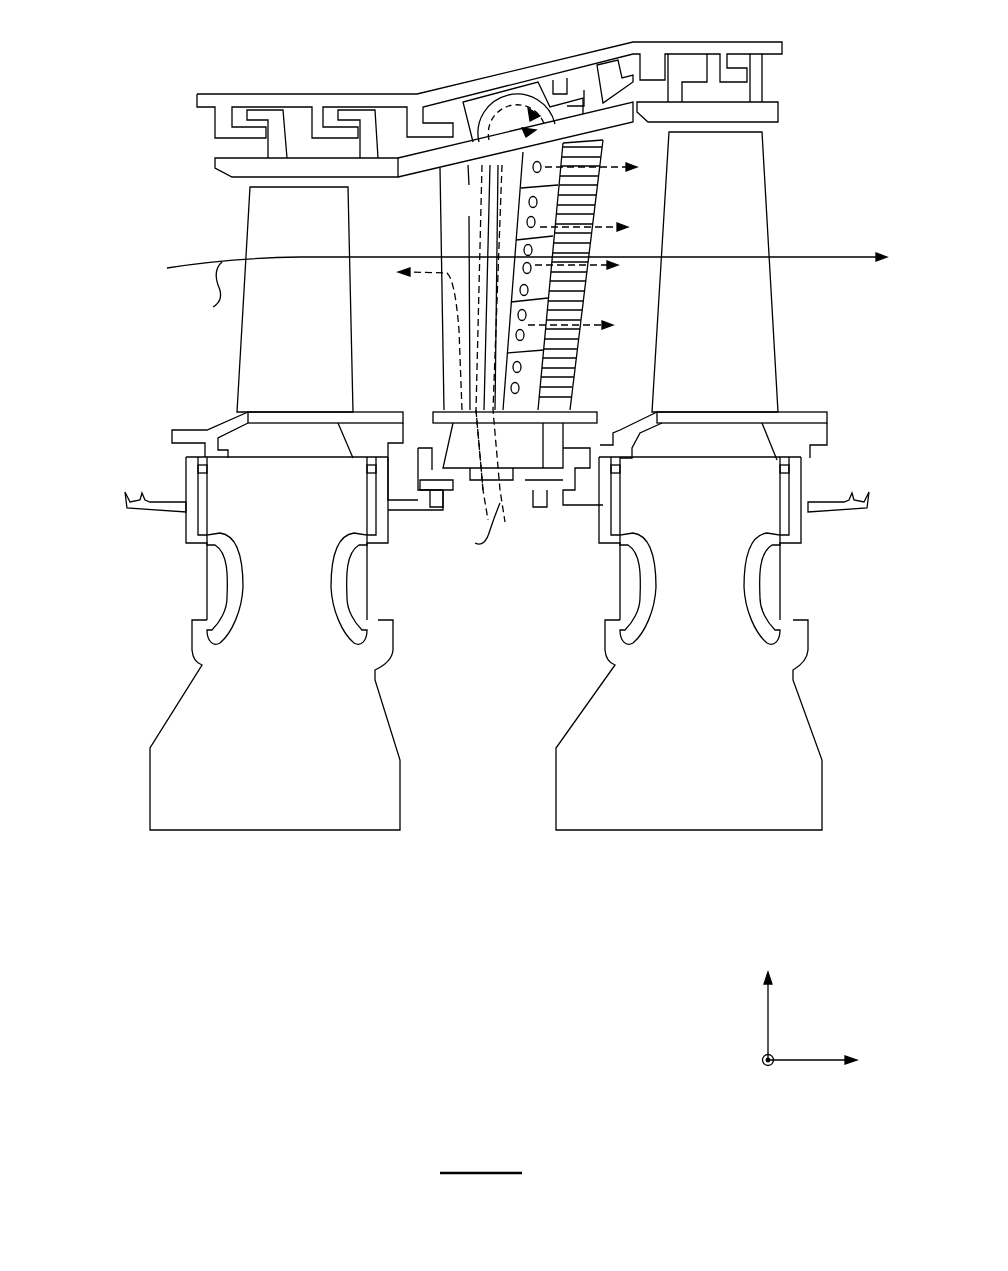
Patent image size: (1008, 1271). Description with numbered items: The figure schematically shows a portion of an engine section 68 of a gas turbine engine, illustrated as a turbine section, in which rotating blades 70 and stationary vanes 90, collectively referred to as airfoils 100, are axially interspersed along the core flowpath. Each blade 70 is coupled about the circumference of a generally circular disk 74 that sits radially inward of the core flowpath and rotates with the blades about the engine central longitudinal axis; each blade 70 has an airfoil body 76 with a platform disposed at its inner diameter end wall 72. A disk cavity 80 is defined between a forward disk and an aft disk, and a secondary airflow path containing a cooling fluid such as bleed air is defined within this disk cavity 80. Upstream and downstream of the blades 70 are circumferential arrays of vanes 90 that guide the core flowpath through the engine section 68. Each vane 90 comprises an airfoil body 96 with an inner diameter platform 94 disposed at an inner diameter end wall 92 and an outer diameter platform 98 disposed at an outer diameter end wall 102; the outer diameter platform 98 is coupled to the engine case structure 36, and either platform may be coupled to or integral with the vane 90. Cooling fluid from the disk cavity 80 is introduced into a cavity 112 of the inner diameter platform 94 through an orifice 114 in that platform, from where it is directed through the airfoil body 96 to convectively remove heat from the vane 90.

The engine section 68 is at (85, 80).
The engine case structure 36 is at (258, 100).
The outer diameter end wall 102 is at (453, 158).
The outer diameter platform 98 is at (597, 100).
The airfoils 100 is at (501, 601).
The blade 70 is at (228, 210).
The vane 90 is at (432, 245).
The airfoil body 96 is at (482, 211).
The inner diameter end wall 92 is at (560, 395).
The inner diameter platform 94 is at (433, 427).
The cavity 112 is at (527, 457).
The orifice 114 is at (500, 500).
The airfoil body 76 is at (282, 368).
The inner diameter end wall 72 is at (672, 412).
The disk 74 is at (373, 728).
The disk cavity 80 is at (487, 657).